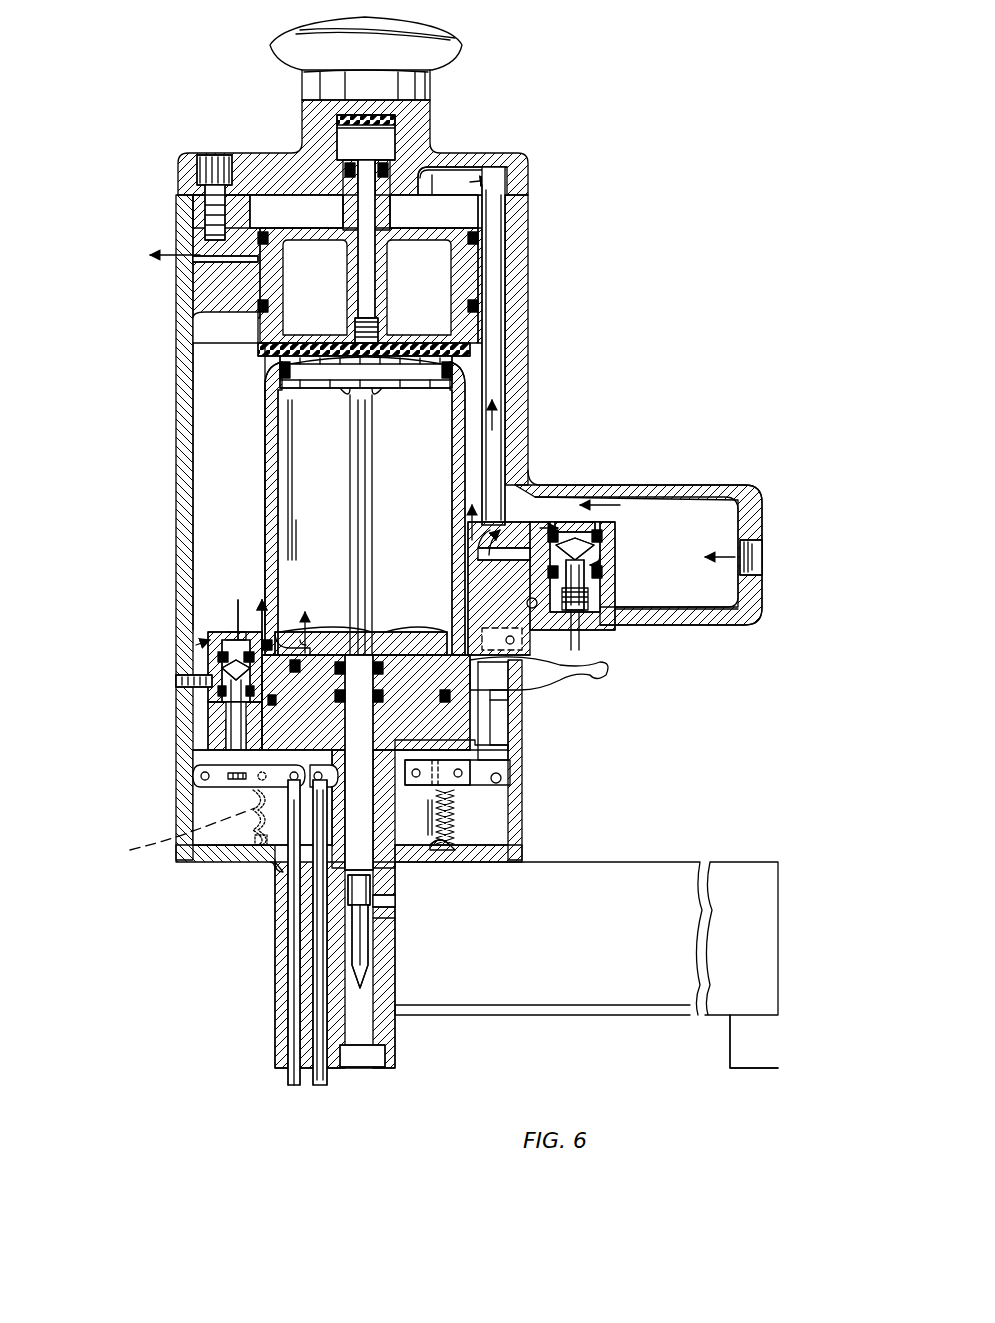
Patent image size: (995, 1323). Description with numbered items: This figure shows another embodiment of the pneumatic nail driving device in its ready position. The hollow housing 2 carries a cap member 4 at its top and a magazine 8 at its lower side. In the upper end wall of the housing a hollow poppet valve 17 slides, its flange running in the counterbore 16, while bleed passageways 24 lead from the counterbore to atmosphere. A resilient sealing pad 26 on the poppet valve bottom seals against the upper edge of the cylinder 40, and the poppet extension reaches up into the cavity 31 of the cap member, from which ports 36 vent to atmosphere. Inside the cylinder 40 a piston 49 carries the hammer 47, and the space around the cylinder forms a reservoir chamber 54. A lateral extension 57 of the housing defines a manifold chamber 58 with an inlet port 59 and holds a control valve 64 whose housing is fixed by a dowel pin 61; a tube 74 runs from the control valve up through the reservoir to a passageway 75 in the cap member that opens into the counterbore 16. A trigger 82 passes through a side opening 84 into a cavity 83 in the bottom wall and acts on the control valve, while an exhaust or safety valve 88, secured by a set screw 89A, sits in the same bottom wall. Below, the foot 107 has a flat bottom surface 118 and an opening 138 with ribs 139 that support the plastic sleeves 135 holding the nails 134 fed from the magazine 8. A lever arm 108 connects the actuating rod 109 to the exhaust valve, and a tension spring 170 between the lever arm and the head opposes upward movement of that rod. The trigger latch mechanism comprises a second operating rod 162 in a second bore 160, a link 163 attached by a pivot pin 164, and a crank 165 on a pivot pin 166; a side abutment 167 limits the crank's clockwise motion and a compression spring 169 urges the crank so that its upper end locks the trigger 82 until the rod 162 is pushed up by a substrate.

The housing 2 is at (175, 468).
The cap member 4 is at (244, 152).
The magazine 8 is at (666, 860).
The counterbore 16 is at (252, 205).
The poppet valve 17 is at (480, 278).
The passageways 24 is at (192, 262).
The resilient sealing pad 26 is at (260, 352).
The cavity 31 is at (370, 143).
The passageways or ports 36 is at (318, 130).
The cylinder 40 is at (264, 518).
The hammer or driving member 47 is at (352, 478).
The piston 49 is at (318, 390).
The chamber 54 is at (212, 560).
The lateral extension 57 is at (714, 628).
The manifold chamber 58 is at (690, 508).
The inlet port 59 is at (770, 548).
The dowel pin 61 is at (528, 604).
The control valve 64 is at (590, 548).
The tube 74 is at (508, 372).
The passageway or cavity 75 is at (500, 168).
The trigger 82 is at (606, 683).
The cavity 83 is at (512, 740).
The side opening 84 is at (512, 690).
The exhaust or safety valve 88 is at (200, 650).
The set screw 89A is at (182, 688).
The foot 107 is at (274, 1030).
The lever arm 108 is at (215, 782).
The actuating rod 109 is at (292, 898).
The bottom surface 118 is at (387, 1072).
The nails 134 is at (362, 942).
The plastic sleeves 135 is at (372, 888).
The opening 138 is at (392, 1010).
The rib 139 is at (385, 912).
The second axially extending bore 160 is at (320, 922).
The second operating rod 162 is at (320, 950).
The link 163 is at (436, 820).
The pivot pin 164 is at (416, 790).
The crank 165 is at (485, 785).
The pivot pin 166 is at (502, 778).
The side abutment 167 is at (512, 712).
The compression spring 169 is at (462, 825).
The tension spring 170 is at (171, 835).